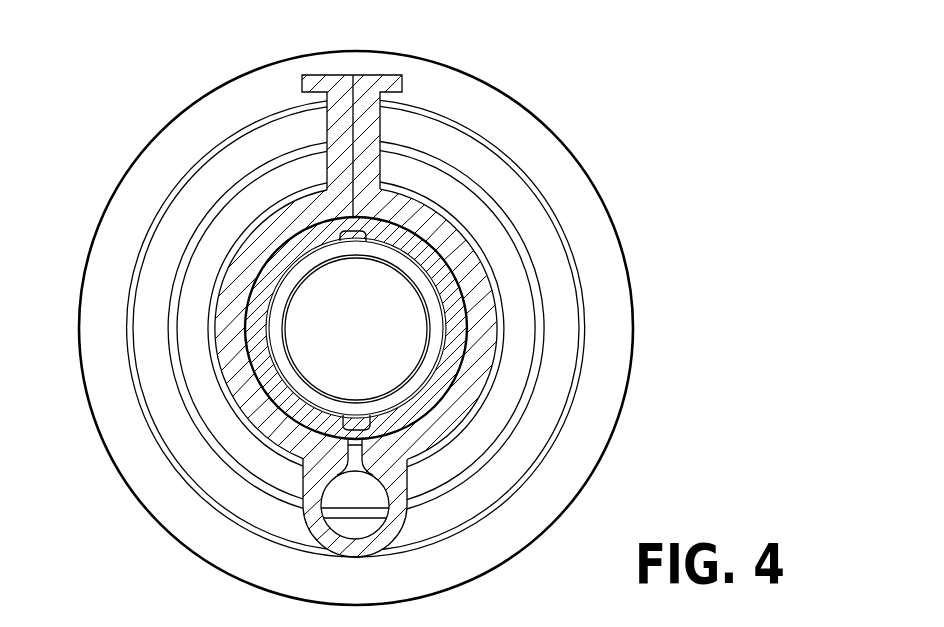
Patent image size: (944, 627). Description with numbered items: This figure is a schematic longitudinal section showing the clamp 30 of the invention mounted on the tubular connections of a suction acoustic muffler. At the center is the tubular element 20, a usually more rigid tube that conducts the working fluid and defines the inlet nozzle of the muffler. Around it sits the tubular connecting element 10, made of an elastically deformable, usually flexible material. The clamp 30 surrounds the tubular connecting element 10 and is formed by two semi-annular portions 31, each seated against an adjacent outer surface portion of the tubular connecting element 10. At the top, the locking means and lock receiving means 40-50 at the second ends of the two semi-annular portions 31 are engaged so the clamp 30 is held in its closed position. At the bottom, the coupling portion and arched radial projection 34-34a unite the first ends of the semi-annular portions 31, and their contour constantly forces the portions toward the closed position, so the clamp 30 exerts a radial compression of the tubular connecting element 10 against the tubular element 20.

The tubular connecting element 10 is at (253, 332).
The tubular element 20 is at (331, 256).
The clamp 30 is at (470, 231).
The semi-annular portion 31 is at (236, 372).
The locking means and lock receiving means 40-50 is at (357, 120).
The coupling portion and arched radial projection 34-34a is at (394, 526).